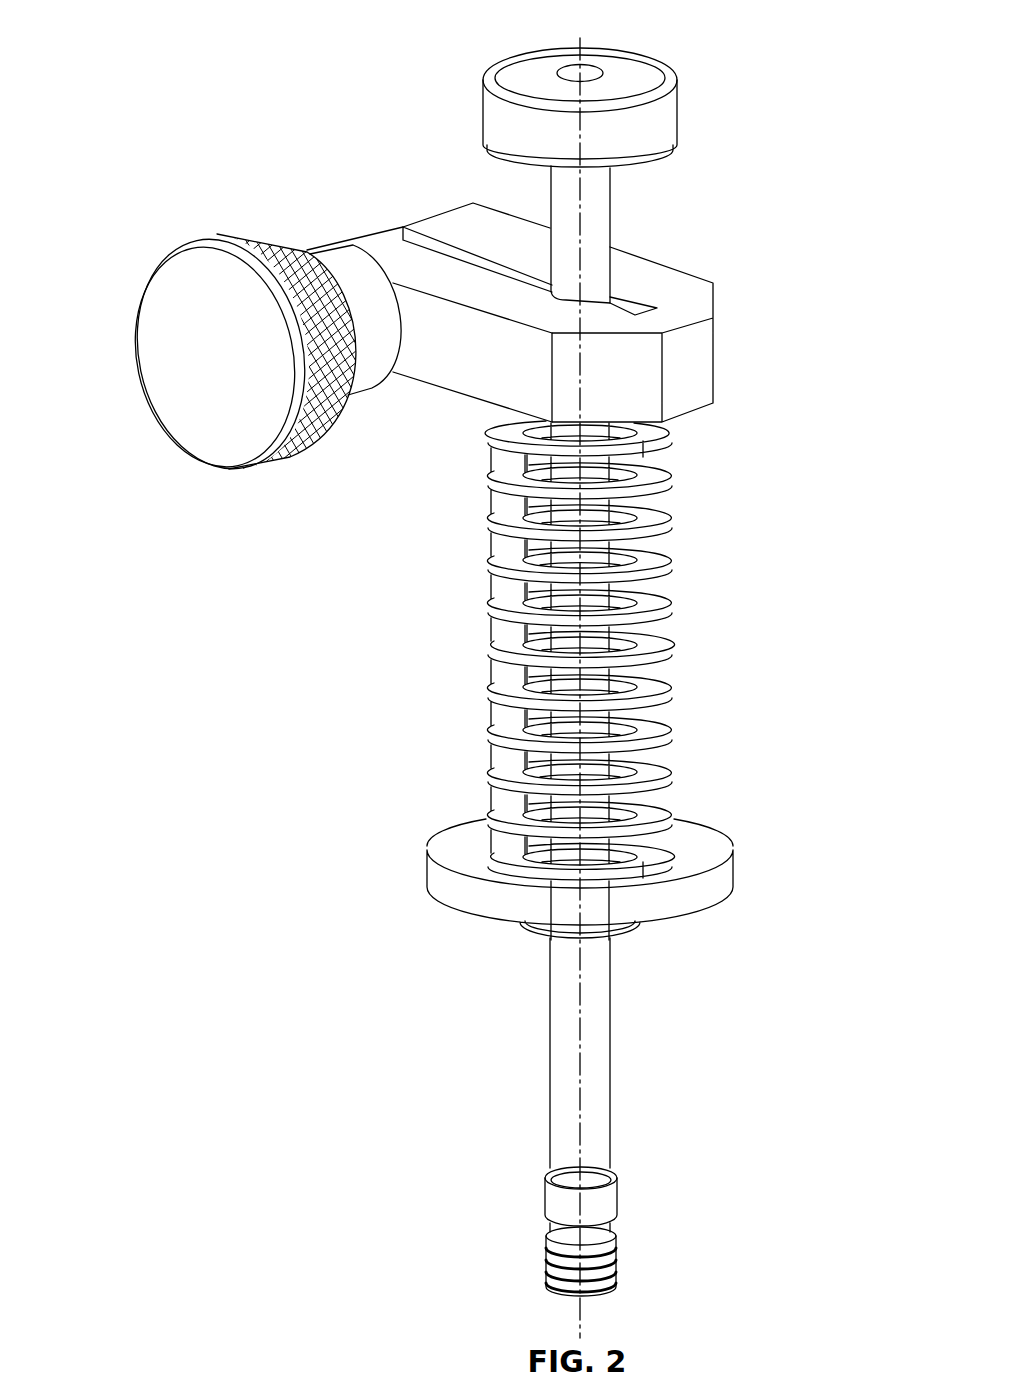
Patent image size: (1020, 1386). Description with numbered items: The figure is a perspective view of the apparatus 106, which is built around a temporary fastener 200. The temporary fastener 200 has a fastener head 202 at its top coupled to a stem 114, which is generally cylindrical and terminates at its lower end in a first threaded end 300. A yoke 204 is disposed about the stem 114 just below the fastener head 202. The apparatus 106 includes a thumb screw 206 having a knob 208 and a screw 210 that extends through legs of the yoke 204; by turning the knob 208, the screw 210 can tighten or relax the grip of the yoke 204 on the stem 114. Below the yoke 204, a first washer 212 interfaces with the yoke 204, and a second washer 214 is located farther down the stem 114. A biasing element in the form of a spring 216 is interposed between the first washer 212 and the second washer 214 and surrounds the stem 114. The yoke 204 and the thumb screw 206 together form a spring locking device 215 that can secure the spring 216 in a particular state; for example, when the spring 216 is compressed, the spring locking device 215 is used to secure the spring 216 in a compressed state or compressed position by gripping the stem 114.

The apparatus 106 is at (143, 84).
The temporary fastener 200 is at (495, 58).
The fastener head 202 is at (680, 106).
The yoke 204 is at (430, 206).
The thumb screw 206 is at (282, 208).
The knob 208 is at (222, 238).
The screw 210 is at (542, 220).
The first washer 212 is at (478, 428).
The second washer 214 is at (736, 866).
The spring locking device 215 is at (710, 250).
The spring 216 is at (485, 662).
The stem 114 is at (542, 964).
The first threaded end 300 is at (538, 1250).